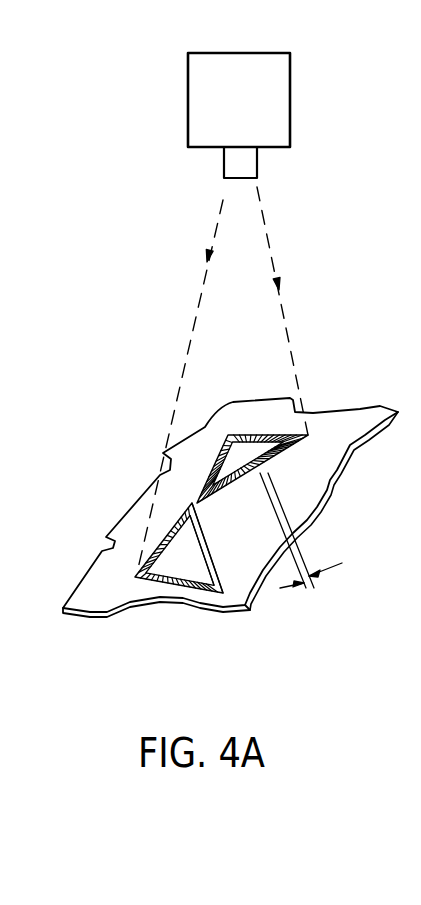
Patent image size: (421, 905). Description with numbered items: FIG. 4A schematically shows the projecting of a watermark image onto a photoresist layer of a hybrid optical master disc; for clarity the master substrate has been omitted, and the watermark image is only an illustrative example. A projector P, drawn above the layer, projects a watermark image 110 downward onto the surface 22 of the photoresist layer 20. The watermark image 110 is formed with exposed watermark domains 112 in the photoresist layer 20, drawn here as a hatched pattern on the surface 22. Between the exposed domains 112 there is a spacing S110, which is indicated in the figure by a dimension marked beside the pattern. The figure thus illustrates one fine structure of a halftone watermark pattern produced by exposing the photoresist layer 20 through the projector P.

The projector P is at (290, 95).
The photoresist layer 20 is at (253, 598).
The surface 22 is at (107, 598).
The watermark image 110 is at (213, 463).
The exposed watermark domains 112 is at (220, 548).
The spacing S110 is at (285, 590).